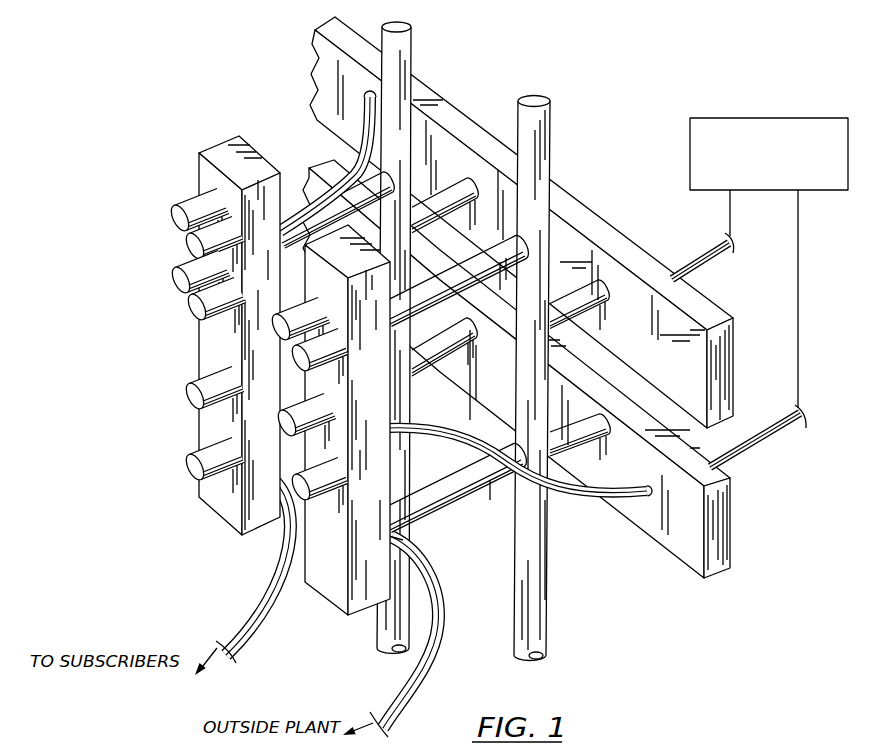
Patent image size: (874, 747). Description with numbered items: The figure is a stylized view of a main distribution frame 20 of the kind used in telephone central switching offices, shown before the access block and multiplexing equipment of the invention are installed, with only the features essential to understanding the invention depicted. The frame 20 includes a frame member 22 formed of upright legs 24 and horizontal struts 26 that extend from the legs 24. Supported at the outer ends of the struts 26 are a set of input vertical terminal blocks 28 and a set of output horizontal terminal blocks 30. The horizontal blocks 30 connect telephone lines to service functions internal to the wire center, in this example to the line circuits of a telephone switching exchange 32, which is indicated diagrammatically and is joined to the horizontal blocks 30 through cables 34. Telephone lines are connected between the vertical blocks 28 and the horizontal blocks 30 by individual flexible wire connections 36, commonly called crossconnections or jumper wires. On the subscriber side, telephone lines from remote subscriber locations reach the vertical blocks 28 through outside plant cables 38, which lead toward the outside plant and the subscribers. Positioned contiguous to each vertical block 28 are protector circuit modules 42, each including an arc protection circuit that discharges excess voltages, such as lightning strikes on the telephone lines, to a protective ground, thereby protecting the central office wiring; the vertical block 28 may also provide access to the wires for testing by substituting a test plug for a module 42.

The main distribution frame 20 is at (490, 377).
The frame member 22 is at (522, 339).
The upright legs 24 is at (405, 50).
The horizontal struts 26 is at (462, 177).
The input vertical terminal blocks 28 is at (238, 135).
The output horizontal terminal blocks 30 is at (712, 323).
The telephone switching exchange 32 is at (782, 117).
The cables 34 is at (692, 267).
The flexible wire connections 36 is at (347, 153).
The outside plant cables 38 is at (273, 587).
The protector circuit modules 42 is at (193, 307).